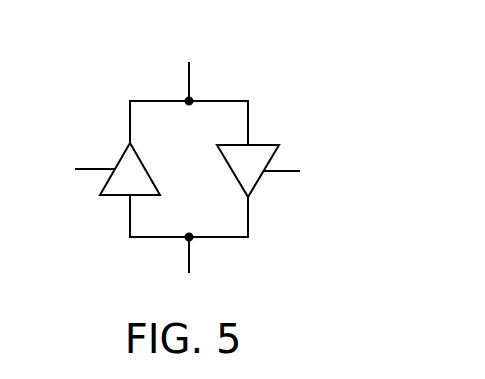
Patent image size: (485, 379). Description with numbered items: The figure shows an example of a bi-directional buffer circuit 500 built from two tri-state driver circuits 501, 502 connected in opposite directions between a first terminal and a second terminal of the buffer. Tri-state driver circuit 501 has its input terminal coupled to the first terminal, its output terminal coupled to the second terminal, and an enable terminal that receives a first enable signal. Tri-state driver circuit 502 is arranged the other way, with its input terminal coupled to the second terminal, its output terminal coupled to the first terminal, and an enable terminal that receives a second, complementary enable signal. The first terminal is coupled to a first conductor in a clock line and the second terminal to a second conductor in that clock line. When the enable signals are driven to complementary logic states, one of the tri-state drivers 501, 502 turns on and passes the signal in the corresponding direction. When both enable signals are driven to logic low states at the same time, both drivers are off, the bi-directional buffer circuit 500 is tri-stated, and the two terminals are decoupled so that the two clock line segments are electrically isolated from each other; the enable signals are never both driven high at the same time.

The bi-directional buffer circuit 500 is at (205, 16).
The tri-state driver circuit 501 is at (113, 197).
The tri-state driver circuit 502 is at (267, 145).